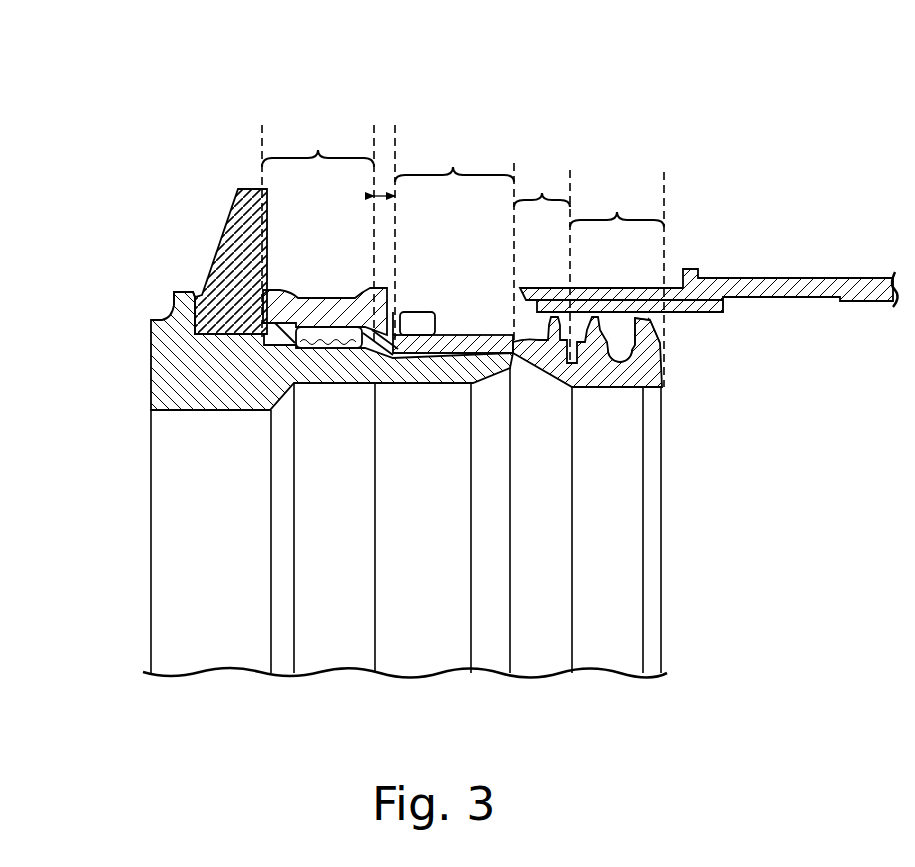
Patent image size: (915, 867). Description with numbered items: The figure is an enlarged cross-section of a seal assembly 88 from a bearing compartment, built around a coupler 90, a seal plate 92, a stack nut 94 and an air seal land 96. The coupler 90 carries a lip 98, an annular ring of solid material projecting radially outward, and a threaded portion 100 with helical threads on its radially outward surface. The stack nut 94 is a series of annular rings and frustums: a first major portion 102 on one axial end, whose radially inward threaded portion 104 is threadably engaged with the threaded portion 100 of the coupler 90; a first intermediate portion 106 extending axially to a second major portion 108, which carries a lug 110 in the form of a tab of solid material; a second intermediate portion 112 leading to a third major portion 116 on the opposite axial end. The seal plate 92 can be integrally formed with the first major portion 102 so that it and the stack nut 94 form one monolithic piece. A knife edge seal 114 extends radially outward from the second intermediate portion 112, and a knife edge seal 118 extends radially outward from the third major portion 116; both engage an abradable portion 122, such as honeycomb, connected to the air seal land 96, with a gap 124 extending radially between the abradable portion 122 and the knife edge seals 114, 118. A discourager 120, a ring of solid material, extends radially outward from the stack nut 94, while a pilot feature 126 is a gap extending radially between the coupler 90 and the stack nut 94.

The seal assembly 88 is at (603, 107).
The coupler 90 is at (148, 385).
The seal plate 92 is at (228, 215).
The stack nut 94 is at (487, 335).
The air seal land 96 is at (782, 277).
The lip 98 is at (183, 292).
The threaded portion 100 is at (377, 335).
The first major portion 102 is at (318, 150).
The threaded portion 104 is at (337, 328).
The first intermediate portion 106 is at (385, 193).
The second major portion 108 is at (453, 167).
The lug 110 is at (425, 311).
The second intermediate portion 112 is at (542, 193).
The knife edge seal 114 is at (538, 343).
The third major portion 116 is at (617, 212).
The knife edge seal 118 is at (605, 342).
The discourager 120 is at (660, 342).
The abradable portion 122 is at (693, 312).
The gap 124 is at (654, 318).
The pilot feature 126 is at (447, 353).